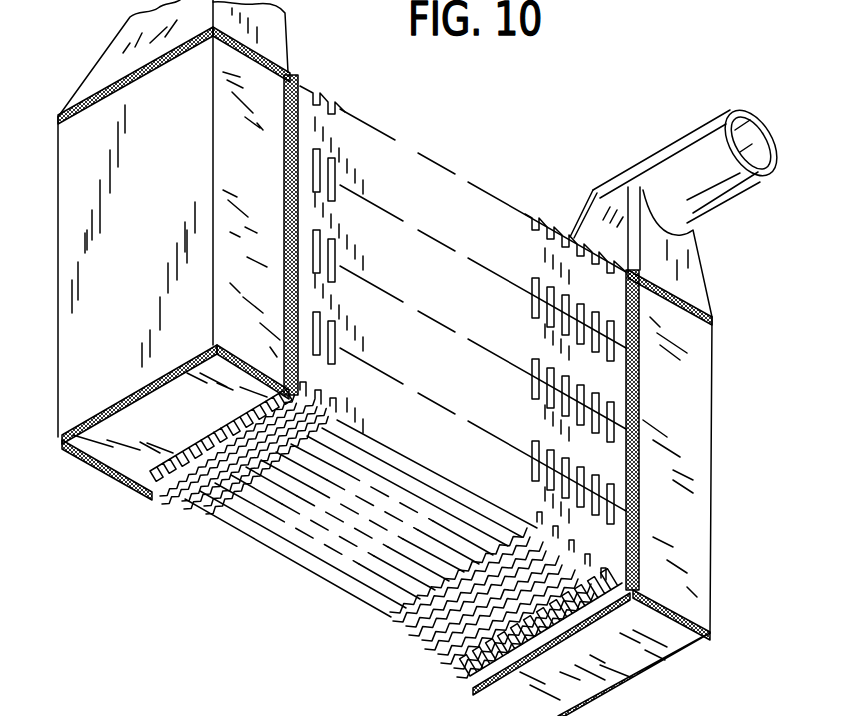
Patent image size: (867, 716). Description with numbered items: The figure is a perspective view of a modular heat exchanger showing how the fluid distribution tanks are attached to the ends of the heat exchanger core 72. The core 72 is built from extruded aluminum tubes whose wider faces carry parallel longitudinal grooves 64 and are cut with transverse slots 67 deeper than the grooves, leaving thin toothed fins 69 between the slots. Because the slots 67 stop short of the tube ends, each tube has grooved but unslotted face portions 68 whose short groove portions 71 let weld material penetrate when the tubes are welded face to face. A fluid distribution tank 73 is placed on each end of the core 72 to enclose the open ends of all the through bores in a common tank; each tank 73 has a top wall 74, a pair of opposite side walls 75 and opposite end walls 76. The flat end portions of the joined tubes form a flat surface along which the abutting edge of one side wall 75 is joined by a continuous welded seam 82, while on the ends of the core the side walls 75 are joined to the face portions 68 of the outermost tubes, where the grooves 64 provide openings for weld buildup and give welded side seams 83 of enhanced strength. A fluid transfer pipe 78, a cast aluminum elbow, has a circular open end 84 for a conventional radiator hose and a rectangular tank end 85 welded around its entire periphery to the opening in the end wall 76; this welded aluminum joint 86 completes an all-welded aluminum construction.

The longitudinal grooves 64 is at (273, 513).
The slots 67 is at (333, 100).
The face portions 68 is at (157, 480).
The toothed fins 69 is at (318, 92).
The groove portions 71 is at (240, 440).
The heat exchanger core 72 is at (460, 213).
The fluid distribution tank 73 is at (95, 345).
The top wall 74 is at (72, 280).
The side walls 75 is at (298, 68).
The end walls 76 is at (117, 470).
The fluid transfer pipe 78 is at (130, 43).
The welded seam 82 is at (286, 217).
The welded side seams 83 is at (170, 367).
The circular open end 84 is at (745, 110).
The rectangular tank end 85 is at (597, 220).
The welded aluminum joint 86 is at (100, 92).